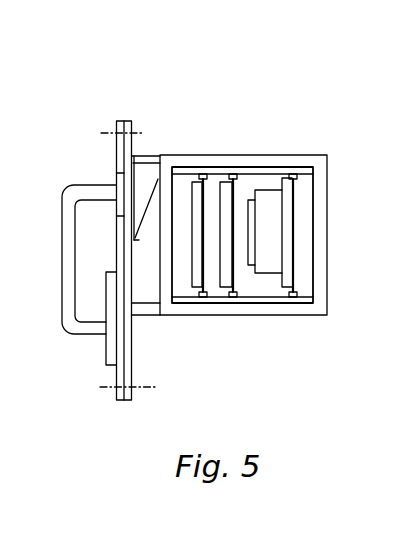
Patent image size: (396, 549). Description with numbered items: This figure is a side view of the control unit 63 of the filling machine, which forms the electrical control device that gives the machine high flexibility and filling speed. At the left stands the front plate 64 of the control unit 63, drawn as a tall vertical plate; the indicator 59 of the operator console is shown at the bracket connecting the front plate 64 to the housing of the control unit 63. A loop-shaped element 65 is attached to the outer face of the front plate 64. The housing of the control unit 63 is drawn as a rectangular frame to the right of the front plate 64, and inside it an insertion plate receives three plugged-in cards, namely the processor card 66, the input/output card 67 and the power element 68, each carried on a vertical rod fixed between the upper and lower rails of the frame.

The indicator 59 is at (138, 193).
The control unit 63 is at (164, 161).
The front plate 64 is at (120, 126).
The handle 65 is at (100, 329).
The processor card 66 is at (199, 186).
The input/output card 67 is at (221, 193).
The power element 68 is at (265, 205).